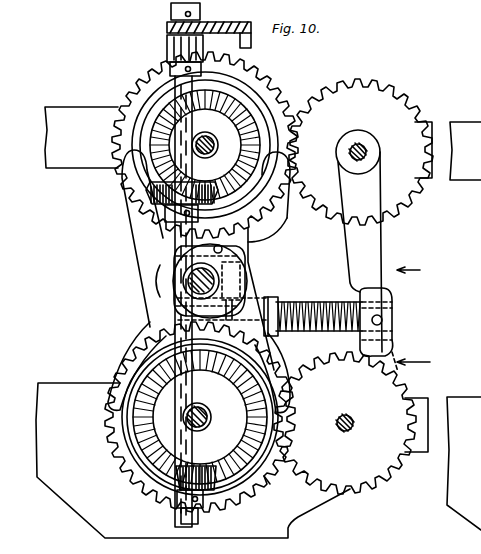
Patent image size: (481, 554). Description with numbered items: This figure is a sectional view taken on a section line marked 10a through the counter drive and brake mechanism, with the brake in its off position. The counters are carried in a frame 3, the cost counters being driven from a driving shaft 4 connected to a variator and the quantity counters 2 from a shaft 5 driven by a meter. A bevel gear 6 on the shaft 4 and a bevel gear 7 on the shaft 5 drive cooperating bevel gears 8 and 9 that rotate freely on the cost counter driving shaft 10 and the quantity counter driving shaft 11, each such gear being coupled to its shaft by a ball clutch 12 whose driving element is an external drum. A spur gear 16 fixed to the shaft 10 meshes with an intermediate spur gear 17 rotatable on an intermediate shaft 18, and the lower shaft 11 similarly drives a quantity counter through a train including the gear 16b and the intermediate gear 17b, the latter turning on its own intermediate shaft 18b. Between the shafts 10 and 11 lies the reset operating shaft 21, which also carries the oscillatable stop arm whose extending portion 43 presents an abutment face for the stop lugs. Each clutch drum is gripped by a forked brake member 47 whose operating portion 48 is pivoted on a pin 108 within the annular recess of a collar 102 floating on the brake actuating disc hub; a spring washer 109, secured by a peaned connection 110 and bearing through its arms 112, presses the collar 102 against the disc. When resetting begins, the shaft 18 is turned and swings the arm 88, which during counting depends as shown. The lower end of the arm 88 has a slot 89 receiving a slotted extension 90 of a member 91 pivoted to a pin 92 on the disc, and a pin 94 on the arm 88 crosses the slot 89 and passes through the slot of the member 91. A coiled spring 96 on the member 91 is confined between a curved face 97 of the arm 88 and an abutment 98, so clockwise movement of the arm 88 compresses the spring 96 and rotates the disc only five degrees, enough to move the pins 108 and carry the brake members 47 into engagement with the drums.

The quantity counters 2 is at (209, 39).
The frame 3 is at (88, 165).
The driving shaft 4 is at (170, 517).
The shaft 5 is at (205, 518).
The bevel gear 6 is at (148, 200).
The bevel gear 7 is at (220, 486).
The cooperating bevel gear 8 is at (250, 118).
The cooperating bevel gear 9 is at (136, 462).
The cost counter driving shaft 10 is at (214, 146).
The direction arrows 10a is at (413, 323).
The quantity counter driving shaft 11 is at (208, 418).
The ball clutch 12 is at (162, 98).
The spur gear 16 is at (272, 94).
The spur gear 16b is at (272, 482).
The intermediate spur gear 17 is at (404, 104).
The intermediate spur gear 17b is at (376, 484).
The intermediate shaft 18 is at (362, 148).
The lower gear pivot 18b is at (352, 418).
The reset operating shaft 21 is at (196, 284).
The oppositely extending portion 43 is at (193, 468).
The brake member 47 is at (142, 226).
The operating portion 48 is at (232, 276).
The arm 88 is at (380, 247).
The slot 89 is at (392, 310).
The slotted extension 90 is at (392, 330).
The member 91 is at (267, 302).
The pin 92 is at (208, 320).
The pin 94 is at (384, 320).
The coiled spring 96 is at (306, 306).
The curved face 97 is at (354, 338).
The abutment 98 is at (276, 302).
The collar 102 is at (224, 232).
The pin 108 is at (222, 250).
The spring washer 109 is at (235, 298).
The peaned connection 110 is at (190, 262).
The arms 112 is at (163, 280).